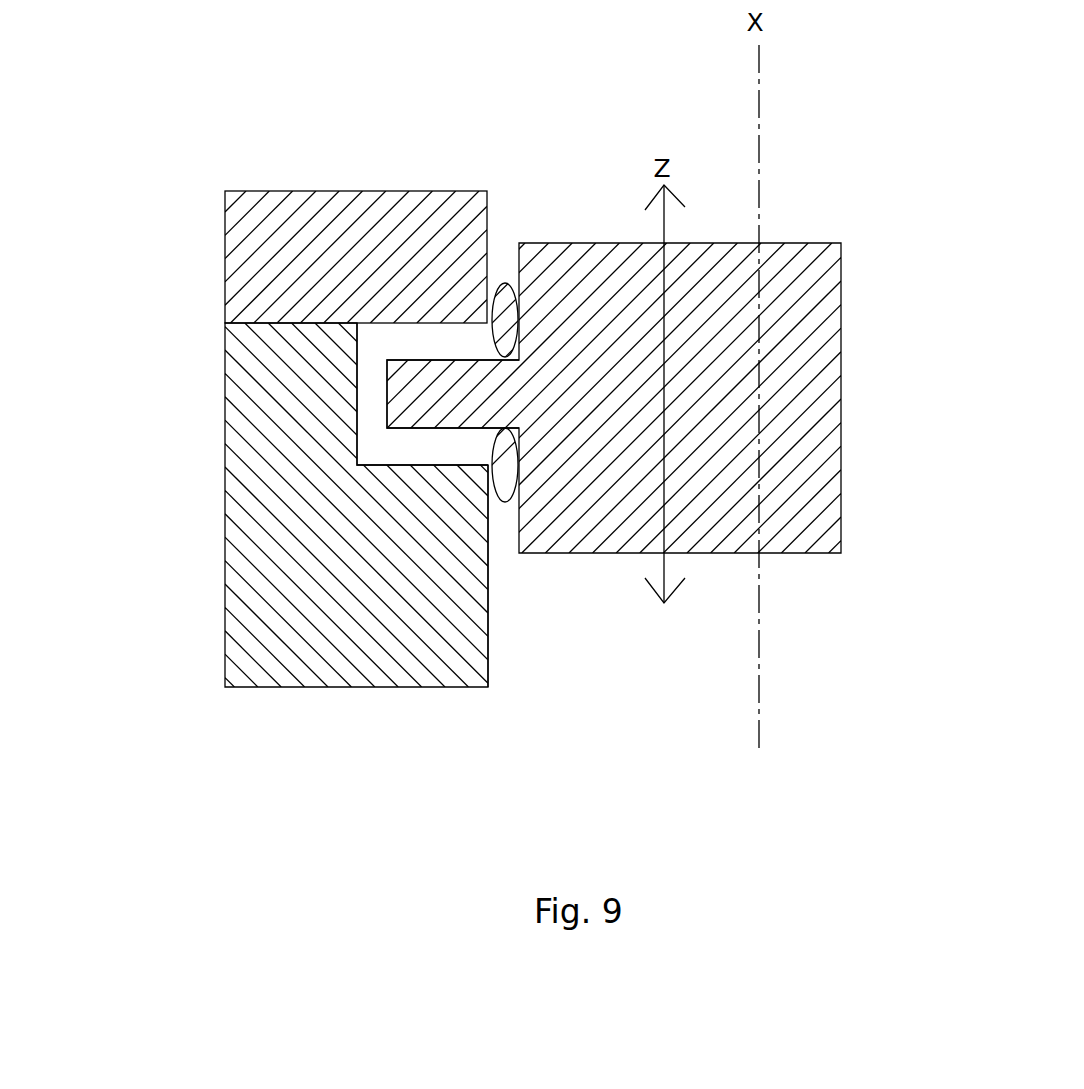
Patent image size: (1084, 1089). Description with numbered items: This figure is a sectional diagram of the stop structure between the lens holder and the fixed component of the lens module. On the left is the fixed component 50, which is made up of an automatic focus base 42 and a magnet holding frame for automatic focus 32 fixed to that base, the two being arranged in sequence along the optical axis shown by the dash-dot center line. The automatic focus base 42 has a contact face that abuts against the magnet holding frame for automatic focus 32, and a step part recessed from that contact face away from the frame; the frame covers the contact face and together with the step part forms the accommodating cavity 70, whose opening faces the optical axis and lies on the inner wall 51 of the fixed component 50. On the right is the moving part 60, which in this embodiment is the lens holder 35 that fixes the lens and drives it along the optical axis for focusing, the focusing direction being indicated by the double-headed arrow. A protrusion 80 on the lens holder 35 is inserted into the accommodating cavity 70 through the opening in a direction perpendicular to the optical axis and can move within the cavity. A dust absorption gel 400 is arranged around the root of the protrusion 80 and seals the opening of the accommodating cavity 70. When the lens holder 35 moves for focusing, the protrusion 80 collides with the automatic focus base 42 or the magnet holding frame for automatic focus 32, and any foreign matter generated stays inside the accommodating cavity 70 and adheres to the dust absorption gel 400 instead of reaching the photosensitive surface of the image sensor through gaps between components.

The fixed component 50 is at (316, 434).
The magnet holding frame for automatic focus 32 is at (315, 217).
The automatic focus base 42 is at (383, 659).
The inner wall 51 is at (488, 588).
The accommodating cavity 70 is at (390, 338).
The protrusion 80 is at (438, 393).
The dust absorption gel 400 is at (505, 290).
The moving part 60 is at (675, 299).
The lens holder 35 is at (822, 385).